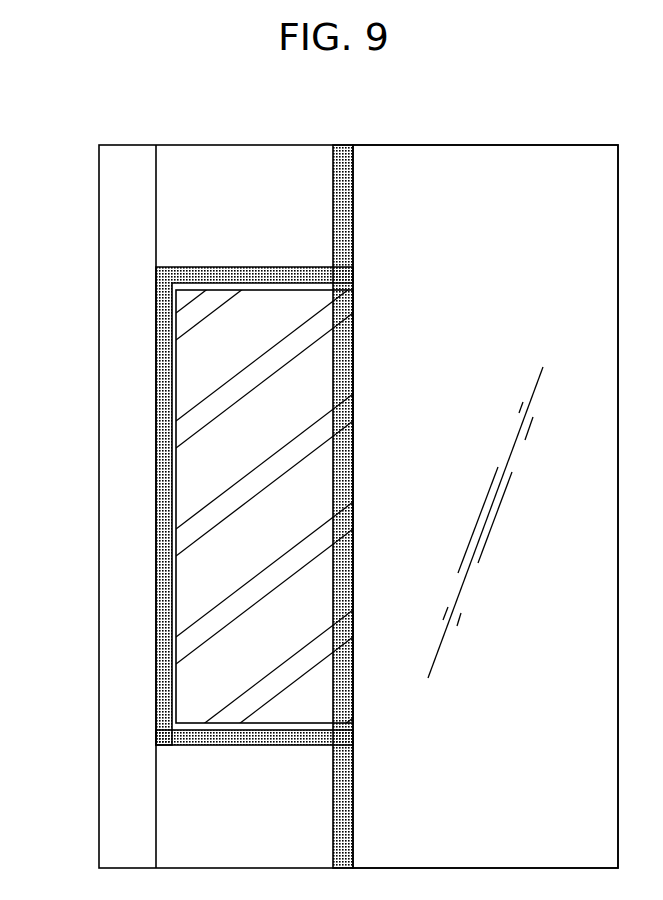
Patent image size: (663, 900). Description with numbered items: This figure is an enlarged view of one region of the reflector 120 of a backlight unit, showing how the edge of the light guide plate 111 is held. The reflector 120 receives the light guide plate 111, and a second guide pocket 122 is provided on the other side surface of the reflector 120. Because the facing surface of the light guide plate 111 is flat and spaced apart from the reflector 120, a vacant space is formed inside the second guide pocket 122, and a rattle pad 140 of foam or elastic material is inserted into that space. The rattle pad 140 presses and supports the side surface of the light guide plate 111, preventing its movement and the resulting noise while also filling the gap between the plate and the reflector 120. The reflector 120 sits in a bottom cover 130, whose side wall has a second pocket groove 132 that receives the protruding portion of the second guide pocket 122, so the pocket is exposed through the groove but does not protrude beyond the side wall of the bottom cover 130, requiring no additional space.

The light guide plate 111 is at (507, 163).
The reflector 120 is at (342, 146).
The second guide pocket 122 is at (156, 343).
The bottom cover 130 is at (156, 191).
The second pocket groove 132 is at (204, 750).
The rattle pad 140 is at (197, 481).